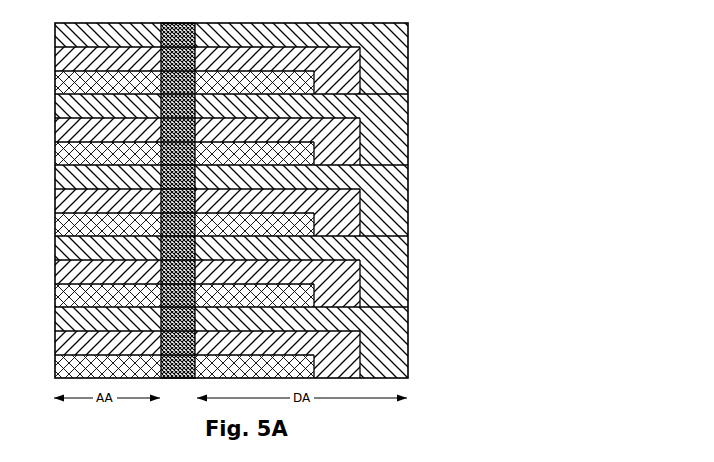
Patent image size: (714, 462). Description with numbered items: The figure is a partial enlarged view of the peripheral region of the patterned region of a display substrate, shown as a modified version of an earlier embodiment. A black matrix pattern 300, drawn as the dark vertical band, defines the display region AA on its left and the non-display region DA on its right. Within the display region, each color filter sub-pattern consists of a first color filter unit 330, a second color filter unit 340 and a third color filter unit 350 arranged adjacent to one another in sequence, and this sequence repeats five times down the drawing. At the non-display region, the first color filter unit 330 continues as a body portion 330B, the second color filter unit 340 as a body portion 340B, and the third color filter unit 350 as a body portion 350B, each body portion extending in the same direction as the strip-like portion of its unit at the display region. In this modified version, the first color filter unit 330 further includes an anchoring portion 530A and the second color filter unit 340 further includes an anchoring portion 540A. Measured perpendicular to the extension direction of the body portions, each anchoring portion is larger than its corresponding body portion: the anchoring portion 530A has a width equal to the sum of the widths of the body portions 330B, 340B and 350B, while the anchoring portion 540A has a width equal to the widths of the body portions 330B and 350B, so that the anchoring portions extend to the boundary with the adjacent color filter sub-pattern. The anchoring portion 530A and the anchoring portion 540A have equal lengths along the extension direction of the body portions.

The black matrix pattern 300 is at (178, 200).
The first color filter unit 330 is at (93, 177).
The second color filter unit 340 is at (93, 201).
The third color filter unit 350 is at (93, 224).
The body portion 330B is at (277, 177).
The body portion 340B is at (277, 201).
The body portion 350B is at (254, 224).
The anchoring portion 530A is at (384, 200).
The anchoring portion 540A is at (337, 221).